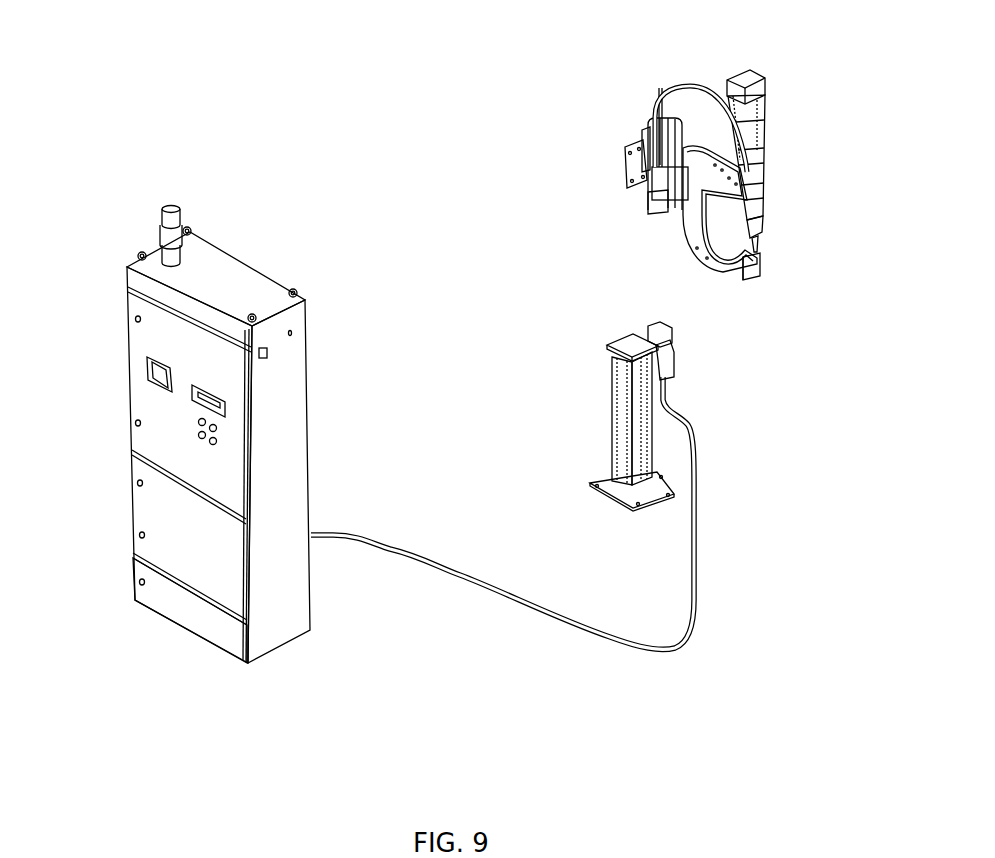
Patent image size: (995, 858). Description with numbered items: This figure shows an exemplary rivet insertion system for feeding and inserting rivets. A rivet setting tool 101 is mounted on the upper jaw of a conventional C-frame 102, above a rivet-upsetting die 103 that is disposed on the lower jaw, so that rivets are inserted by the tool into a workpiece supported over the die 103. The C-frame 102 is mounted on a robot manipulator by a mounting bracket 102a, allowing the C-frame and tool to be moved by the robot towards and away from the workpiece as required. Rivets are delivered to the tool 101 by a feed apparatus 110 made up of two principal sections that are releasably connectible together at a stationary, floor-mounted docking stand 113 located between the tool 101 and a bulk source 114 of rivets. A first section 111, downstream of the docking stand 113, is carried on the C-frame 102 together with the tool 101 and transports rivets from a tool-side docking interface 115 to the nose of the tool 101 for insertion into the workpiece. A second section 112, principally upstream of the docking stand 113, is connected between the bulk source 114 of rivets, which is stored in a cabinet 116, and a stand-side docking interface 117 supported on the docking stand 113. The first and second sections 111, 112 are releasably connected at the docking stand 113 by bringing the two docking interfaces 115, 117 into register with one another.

The rivet setting tool 101 is at (762, 173).
The C-frame 102 is at (693, 231).
The mounting bracket 102a is at (625, 168).
The rivet-upsetting die 103 is at (758, 241).
The feed apparatus 110 is at (505, 268).
The first section 111 is at (686, 149).
The second section 112 is at (532, 705).
The docking stand 113 is at (607, 428).
The bulk source of rivets 114 is at (205, 560).
The tool-side docking interface 115 is at (688, 88).
The cabinet 116 is at (135, 540).
The stand-side docking interface 117 is at (673, 653).